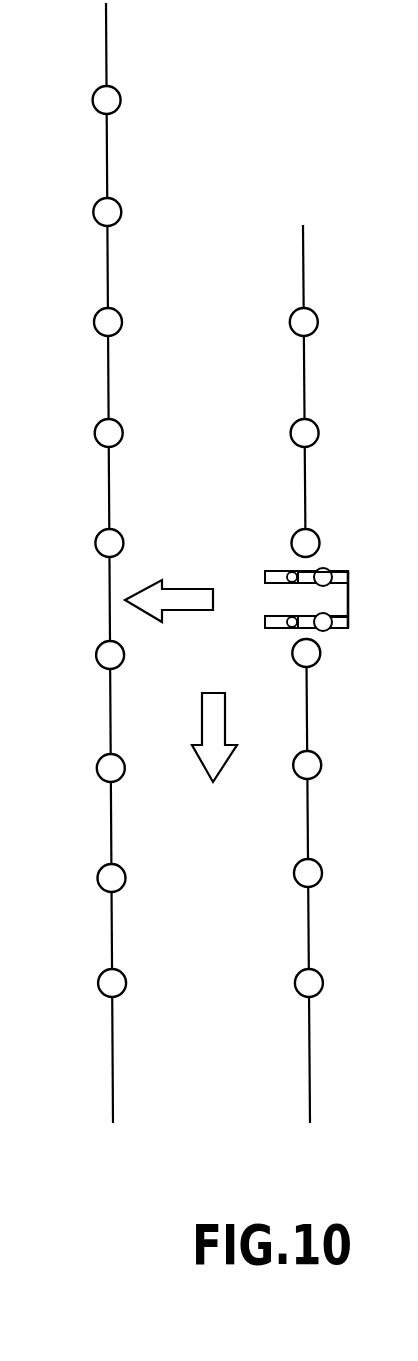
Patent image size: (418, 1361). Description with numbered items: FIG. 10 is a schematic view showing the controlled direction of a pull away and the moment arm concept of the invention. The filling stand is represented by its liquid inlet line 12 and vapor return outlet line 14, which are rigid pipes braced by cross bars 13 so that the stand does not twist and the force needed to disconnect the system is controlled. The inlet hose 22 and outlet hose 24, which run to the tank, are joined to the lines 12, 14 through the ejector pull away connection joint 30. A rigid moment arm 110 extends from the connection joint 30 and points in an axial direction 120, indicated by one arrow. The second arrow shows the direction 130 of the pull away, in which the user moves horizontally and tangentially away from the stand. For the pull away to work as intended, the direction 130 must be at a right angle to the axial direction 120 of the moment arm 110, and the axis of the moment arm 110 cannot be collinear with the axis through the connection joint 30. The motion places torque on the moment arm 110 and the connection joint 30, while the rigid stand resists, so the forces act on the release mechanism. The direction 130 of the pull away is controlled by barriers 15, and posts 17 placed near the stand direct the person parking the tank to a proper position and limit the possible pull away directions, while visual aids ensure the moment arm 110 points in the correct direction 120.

The liquid inlet line 12 is at (322, 592).
The cross bars 13 is at (349, 598).
The vapor return outlet line 14 is at (343, 622).
The barriers 15 is at (308, 829).
The posts 17 is at (107, 260).
The inlet hose 22 is at (277, 572).
The outlet hose 24 is at (277, 630).
The connection joint 30 is at (324, 631).
The moment arm 110 is at (331, 571).
The axial direction of the moment arm 120 is at (193, 598).
The direction of the pull away 130 is at (213, 718).